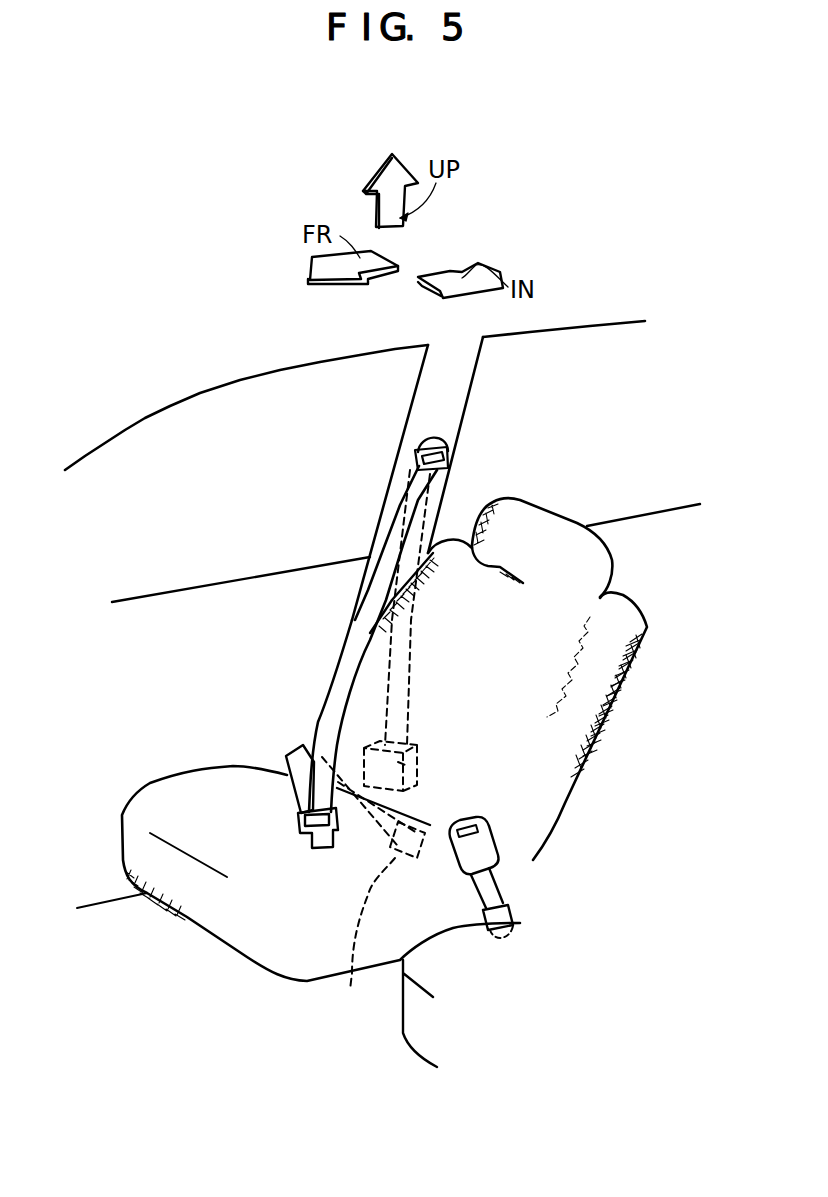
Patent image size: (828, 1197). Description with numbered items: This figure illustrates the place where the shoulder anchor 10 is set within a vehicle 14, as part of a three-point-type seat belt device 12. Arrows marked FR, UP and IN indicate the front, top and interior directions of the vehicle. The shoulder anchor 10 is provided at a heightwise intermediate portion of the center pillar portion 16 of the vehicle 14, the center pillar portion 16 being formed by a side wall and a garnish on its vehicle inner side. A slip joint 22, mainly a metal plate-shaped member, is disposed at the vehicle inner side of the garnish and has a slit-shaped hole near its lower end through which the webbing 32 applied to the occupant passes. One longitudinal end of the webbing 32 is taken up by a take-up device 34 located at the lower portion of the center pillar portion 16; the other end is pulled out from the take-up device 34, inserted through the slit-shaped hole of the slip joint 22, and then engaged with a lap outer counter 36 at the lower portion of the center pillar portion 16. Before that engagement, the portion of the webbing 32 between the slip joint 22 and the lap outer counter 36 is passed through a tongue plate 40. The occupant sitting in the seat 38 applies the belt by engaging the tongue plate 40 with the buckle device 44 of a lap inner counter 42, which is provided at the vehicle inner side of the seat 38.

The shoulder anchor 10 is at (417, 437).
The seat belt device 12 is at (330, 594).
The vehicle 14 is at (162, 405).
The center pillar portion 16 is at (445, 381).
The slip joint 22 is at (447, 448).
The webbing 32 is at (330, 668).
The take-up device 34 is at (418, 760).
The lap outer counter 36 is at (373, 893).
The seat 38 is at (240, 955).
The tongue plate 40 is at (302, 827).
The lap inner counter 42 is at (507, 919).
The buckle device 44 is at (483, 840).